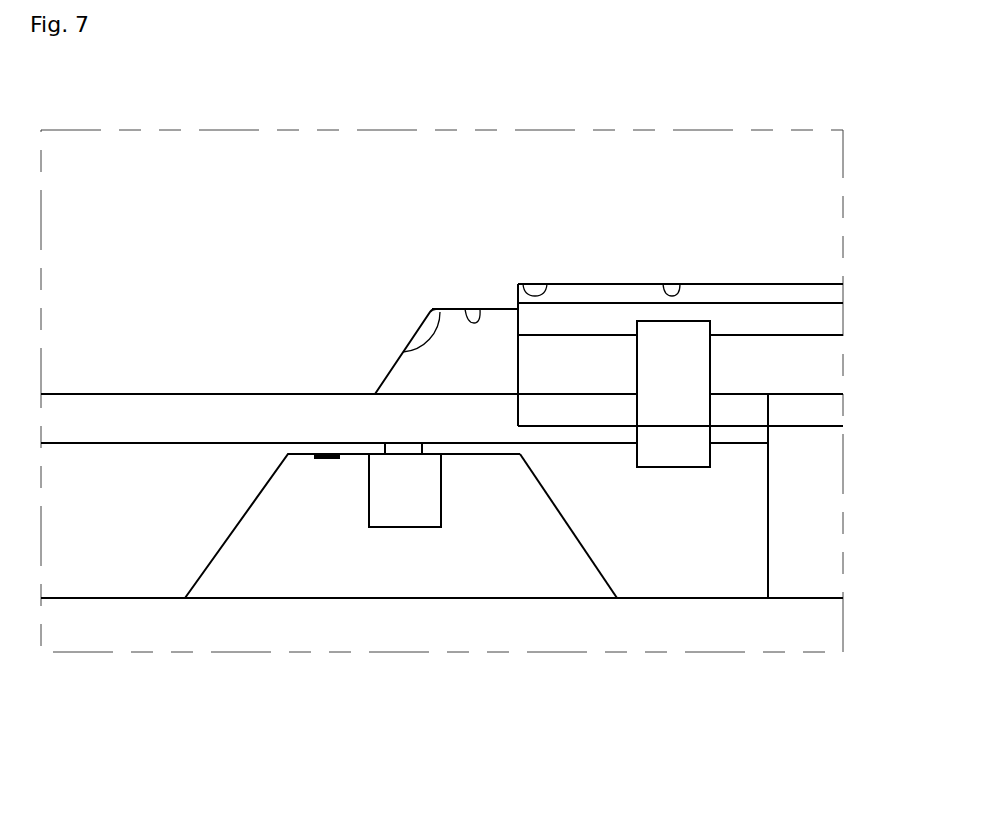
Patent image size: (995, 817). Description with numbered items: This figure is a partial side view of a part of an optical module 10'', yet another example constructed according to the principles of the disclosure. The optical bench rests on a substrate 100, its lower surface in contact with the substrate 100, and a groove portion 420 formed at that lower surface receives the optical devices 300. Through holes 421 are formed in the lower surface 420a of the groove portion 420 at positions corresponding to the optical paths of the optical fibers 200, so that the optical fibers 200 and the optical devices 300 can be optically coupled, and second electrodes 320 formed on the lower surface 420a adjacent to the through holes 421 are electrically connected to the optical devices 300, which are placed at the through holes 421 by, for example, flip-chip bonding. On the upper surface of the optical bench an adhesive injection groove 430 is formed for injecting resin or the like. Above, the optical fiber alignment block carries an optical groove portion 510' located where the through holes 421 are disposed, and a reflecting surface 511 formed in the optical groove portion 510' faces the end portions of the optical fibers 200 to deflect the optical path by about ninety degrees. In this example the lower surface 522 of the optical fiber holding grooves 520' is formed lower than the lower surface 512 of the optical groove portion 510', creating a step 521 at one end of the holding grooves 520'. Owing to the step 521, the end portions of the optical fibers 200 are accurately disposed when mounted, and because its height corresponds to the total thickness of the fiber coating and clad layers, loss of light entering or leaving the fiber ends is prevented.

The optical module 10'' is at (442, 369).
The substrate 100 is at (128, 627).
The optical fibers 200 is at (805, 410).
The optical devices 300 is at (410, 508).
The second electrodes 320 is at (325, 462).
The groove portion 420 is at (232, 582).
The lower surface of the groove portion 420a is at (509, 462).
The through holes 421 is at (400, 455).
The adhesive injection groove 430 is at (688, 437).
The optical groove portion 510' is at (475, 513).
The reflecting surface 511 is at (438, 308).
The lower surface of the optical groove portion 512 is at (479, 309).
The optical fiber holding grooves 520' is at (680, 255).
The step 521 is at (545, 283).
The lower surface of the optical fiber holding grooves 522 is at (673, 285).